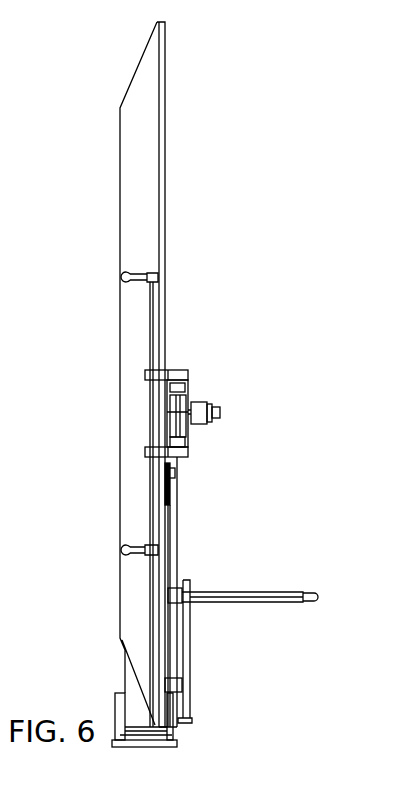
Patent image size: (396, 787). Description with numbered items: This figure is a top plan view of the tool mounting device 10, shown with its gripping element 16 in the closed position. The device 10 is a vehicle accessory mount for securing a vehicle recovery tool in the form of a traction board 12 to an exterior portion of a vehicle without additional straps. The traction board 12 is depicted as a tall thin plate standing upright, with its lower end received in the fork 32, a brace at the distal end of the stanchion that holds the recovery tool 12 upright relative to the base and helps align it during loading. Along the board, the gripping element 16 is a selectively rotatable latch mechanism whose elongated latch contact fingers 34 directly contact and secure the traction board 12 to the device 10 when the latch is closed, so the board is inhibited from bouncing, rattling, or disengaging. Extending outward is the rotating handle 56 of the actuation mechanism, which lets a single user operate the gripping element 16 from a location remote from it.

The tool mounting device 10 is at (280, 242).
The traction board 12 is at (137, 134).
The gripping element 16 is at (204, 359).
The fork 32 is at (118, 707).
The fingers 34 is at (138, 273).
The rotating handle 56 is at (265, 598).